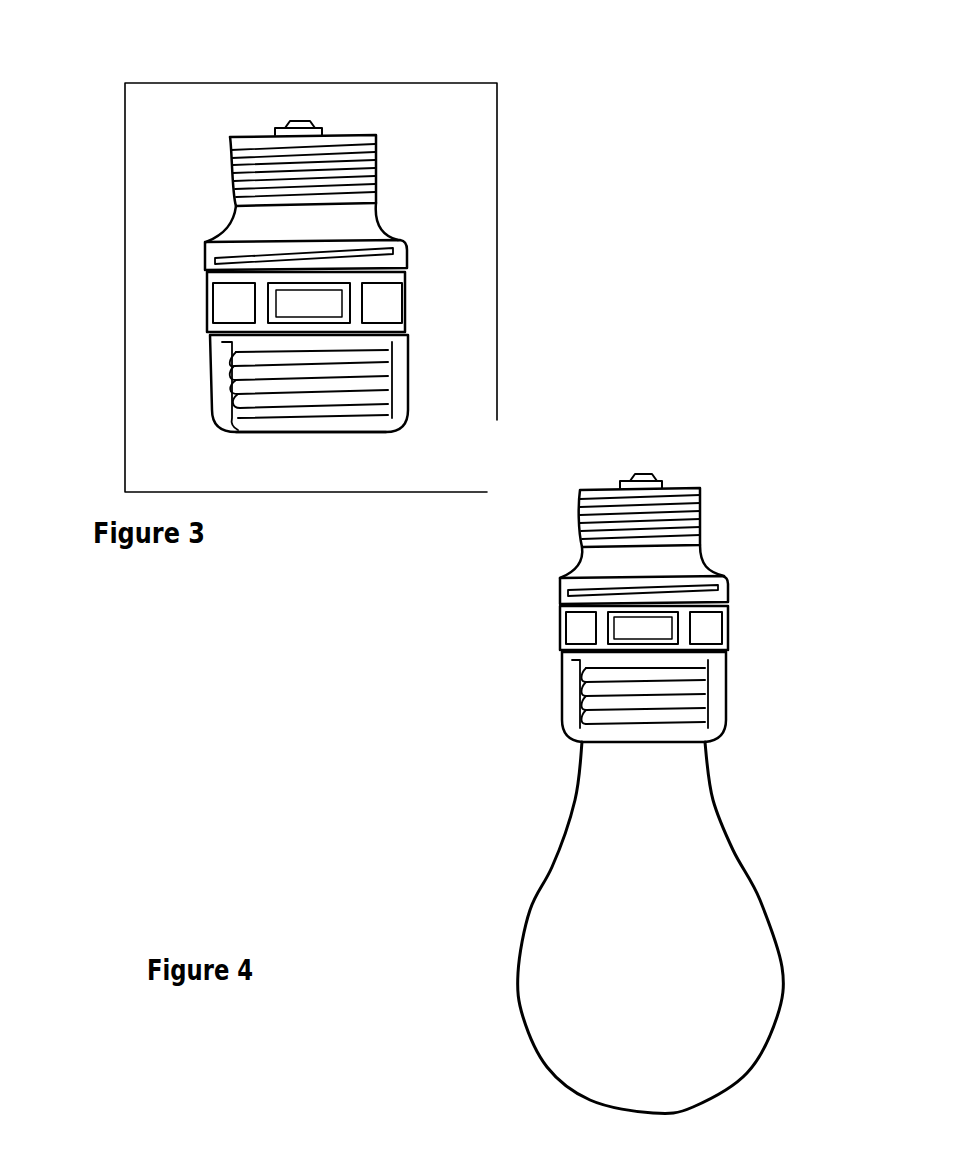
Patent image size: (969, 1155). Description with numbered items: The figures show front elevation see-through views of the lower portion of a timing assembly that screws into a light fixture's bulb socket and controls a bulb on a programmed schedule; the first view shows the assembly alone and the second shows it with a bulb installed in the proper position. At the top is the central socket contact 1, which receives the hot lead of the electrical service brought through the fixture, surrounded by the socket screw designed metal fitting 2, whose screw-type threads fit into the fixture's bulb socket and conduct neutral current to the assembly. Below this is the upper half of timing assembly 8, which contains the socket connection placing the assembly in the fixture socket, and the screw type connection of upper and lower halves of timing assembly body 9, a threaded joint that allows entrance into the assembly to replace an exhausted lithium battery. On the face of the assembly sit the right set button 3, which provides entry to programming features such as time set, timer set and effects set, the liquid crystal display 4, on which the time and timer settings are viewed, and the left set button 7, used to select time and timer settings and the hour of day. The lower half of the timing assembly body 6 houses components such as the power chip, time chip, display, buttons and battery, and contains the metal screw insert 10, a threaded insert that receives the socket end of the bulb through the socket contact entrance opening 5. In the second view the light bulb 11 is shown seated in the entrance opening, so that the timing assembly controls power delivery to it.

In FIG. 3, the central socket contact 1 is at (312, 102).
In FIG. 4, the central socket contact 1 is at (645, 468).
In FIG. 3, the socket screw designed metal fitting 2 is at (383, 162).
In FIG. 4, the socket screw designed metal fitting 2 is at (708, 506).
In FIG. 3, the right set button 3 is at (399, 298).
In FIG. 4, the right set button 3 is at (722, 624).
In FIG. 3, the liquid crystal display 4 is at (337, 312).
In FIG. 4, the liquid crystal display 4 is at (675, 652).
In FIG. 3, the socket contact entrance opening 5 is at (334, 446).
In FIG. 3, the lower half of the timing assembly body 6 is at (198, 356).
In FIG. 4, the lower half of the timing assembly body 6 is at (563, 662).
In FIG. 3, the left set button 7 is at (232, 312).
In FIG. 4, the left set button 7 is at (566, 630).
In FIG. 3, the upper half of timing assembly 8 is at (233, 220).
In FIG. 4, the upper half of timing assembly 8 is at (592, 565).
In FIG. 3, the screw type connection of upper and lower halves of timing assembly body 9 is at (230, 250).
In FIG. 4, the screw type connection of upper and lower halves of timing assembly body 9 is at (567, 590).
In FIG. 3, the metal screw insert 10 is at (272, 398).
In FIG. 4, the metal screw insert 10 is at (642, 688).
In FIG. 4, the light bulb 11 is at (588, 935).